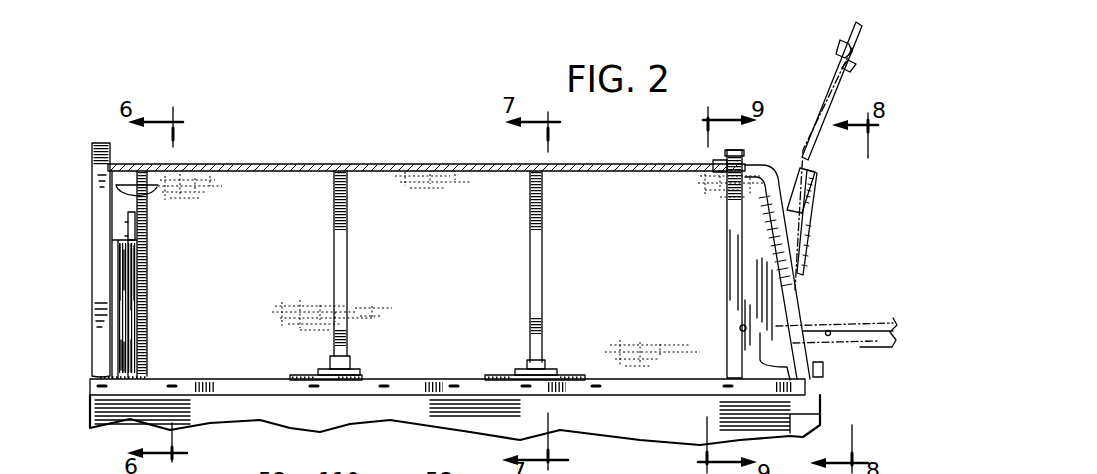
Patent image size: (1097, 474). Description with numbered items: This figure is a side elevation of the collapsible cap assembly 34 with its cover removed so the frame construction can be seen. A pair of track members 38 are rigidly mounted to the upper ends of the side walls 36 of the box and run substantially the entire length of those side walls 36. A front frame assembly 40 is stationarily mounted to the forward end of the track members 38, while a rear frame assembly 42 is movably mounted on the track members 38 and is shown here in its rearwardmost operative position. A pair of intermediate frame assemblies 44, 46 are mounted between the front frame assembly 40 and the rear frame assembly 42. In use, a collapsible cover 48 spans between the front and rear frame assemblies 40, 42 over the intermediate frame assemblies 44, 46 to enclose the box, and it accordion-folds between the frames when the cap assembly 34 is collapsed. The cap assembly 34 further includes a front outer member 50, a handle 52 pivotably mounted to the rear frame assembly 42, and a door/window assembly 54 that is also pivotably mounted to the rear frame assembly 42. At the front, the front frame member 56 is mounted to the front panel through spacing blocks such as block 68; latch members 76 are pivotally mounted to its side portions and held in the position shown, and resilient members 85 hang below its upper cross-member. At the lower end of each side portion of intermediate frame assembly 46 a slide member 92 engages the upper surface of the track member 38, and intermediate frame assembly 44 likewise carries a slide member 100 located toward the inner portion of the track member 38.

The collapsible cap assembly 34 is at (358, 171).
The side walls 36 is at (382, 414).
The track members 38 is at (200, 378).
The front frame assembly 40 is at (119, 152).
The rear frame assembly 42 is at (769, 152).
The intermediate frame assembly 44 is at (345, 254).
The intermediate frame assembly 46 is at (541, 255).
The collapsible cover 48 is at (261, 171).
The front outer member 50 is at (93, 178).
The handle 52 is at (729, 215).
The door/window assembly 54 is at (818, 88).
The front frame member 56 is at (146, 269).
The block 68 is at (122, 290).
The latch members 76 is at (128, 218).
The resilient members 85 is at (153, 194).
The slide member 92 is at (568, 376).
The slide member 100 is at (372, 376).